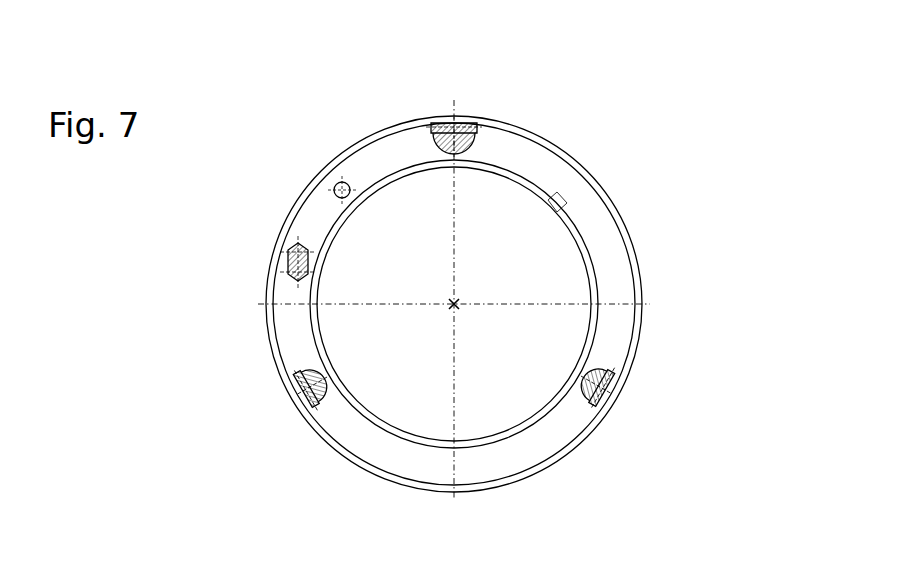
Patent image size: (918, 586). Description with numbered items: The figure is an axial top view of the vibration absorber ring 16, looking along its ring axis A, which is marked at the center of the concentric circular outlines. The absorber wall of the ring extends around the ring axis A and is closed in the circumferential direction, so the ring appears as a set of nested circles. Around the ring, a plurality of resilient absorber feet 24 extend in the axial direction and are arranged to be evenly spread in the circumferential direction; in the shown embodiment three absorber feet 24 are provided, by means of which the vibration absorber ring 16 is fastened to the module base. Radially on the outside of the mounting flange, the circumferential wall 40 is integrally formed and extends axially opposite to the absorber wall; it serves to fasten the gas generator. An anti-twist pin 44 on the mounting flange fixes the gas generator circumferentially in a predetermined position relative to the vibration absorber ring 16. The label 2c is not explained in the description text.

The vibration absorber ring 16 is at (640, 128).
The outer ring portion 2c is at (612, 250).
The circumferential wall 40 is at (513, 480).
The absorber feet 24 is at (472, 106).
The anti-twist pin 44 is at (295, 267).
The ring axis A is at (465, 291).